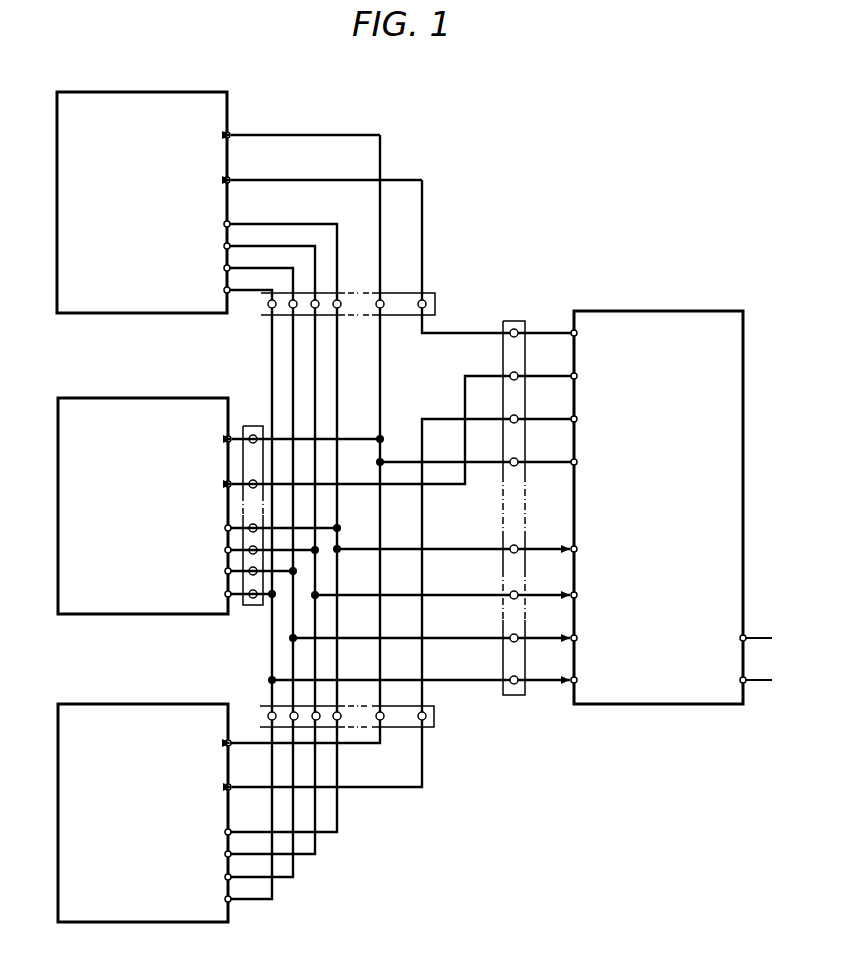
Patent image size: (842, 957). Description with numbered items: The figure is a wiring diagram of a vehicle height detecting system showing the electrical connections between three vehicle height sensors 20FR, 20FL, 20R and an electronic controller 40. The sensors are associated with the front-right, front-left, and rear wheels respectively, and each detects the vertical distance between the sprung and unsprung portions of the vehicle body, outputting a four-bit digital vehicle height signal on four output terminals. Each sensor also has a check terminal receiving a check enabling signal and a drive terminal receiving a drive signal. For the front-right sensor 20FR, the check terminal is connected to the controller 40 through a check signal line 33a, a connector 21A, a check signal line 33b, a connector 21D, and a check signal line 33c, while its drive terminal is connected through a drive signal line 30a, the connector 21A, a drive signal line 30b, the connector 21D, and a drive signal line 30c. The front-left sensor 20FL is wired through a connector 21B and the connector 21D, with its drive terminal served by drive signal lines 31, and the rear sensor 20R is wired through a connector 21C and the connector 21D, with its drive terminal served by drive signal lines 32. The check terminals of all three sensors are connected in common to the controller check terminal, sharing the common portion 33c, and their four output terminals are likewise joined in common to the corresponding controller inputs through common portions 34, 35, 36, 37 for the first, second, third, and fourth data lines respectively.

The vehicle height sensor 20FR is at (110, 92).
The vehicle height sensor 20FL is at (98, 398).
The vehicle height sensor 20R is at (96, 704).
The electronic controller 40 is at (692, 311).
The connector 21A is at (436, 290).
The connector 21B is at (250, 426).
The connector 21C is at (436, 720).
The connector 21D is at (510, 696).
The drive signal line 30a is at (425, 193).
The drive signal line 30b is at (472, 332).
The drive signal line 30c is at (550, 331).
The drive signal lines 31 is at (553, 375).
The drive signal lines 32 is at (553, 418).
The check signal line 33a is at (383, 147).
The check signal line 33b is at (383, 358).
The check signal line 33c is at (553, 461).
The common portion of data signal lines 34 is at (551, 548).
The common portion of data signal lines 35 is at (551, 594).
The common portion of data signal lines 36 is at (551, 637).
The common portion of data signal lines 37 is at (551, 680).